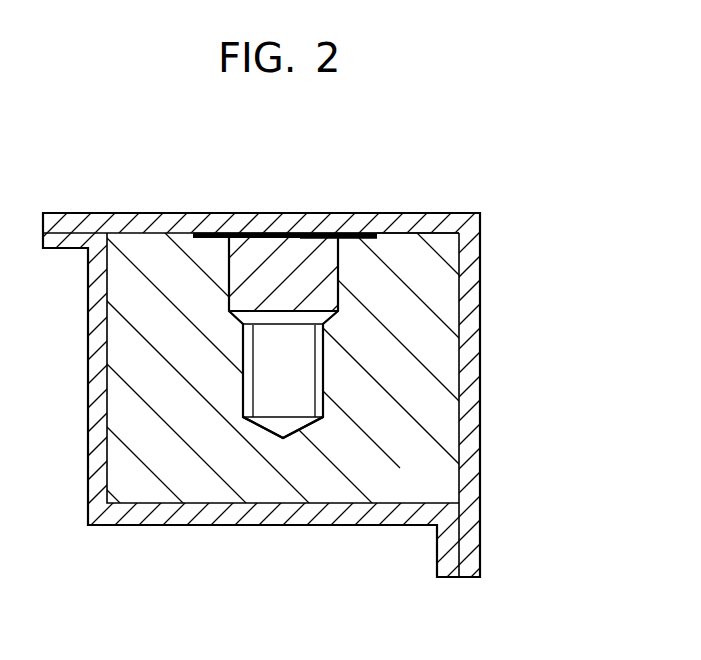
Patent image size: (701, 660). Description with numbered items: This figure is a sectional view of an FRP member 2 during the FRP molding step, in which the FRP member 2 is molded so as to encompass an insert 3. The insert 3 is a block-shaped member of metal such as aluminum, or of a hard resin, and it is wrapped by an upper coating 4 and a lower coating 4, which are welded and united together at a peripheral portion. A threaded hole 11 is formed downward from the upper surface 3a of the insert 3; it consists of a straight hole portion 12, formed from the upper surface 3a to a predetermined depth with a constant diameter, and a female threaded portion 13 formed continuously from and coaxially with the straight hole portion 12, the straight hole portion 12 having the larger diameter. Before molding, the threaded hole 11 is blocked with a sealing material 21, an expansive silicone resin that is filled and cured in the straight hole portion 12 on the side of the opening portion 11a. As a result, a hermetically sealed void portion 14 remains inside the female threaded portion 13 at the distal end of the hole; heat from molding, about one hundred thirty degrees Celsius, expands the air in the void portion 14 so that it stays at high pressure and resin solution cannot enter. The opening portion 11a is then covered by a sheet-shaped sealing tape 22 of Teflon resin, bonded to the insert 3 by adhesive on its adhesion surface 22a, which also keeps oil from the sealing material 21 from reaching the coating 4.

The FRP member 2 is at (487, 211).
The insert 3 is at (434, 225).
The upper surface 3a is at (392, 232).
The coating 4 is at (124, 220).
The threaded hole 11 is at (519, 272).
The opening portion 11a is at (265, 232).
The straight hole portion 12 is at (338, 265).
The female threaded portion 13 is at (323, 342).
The void portion 14 is at (303, 395).
The sealing material 21 is at (240, 271).
The sealing tape 22 is at (212, 232).
The adhesion surface 22a is at (345, 238).